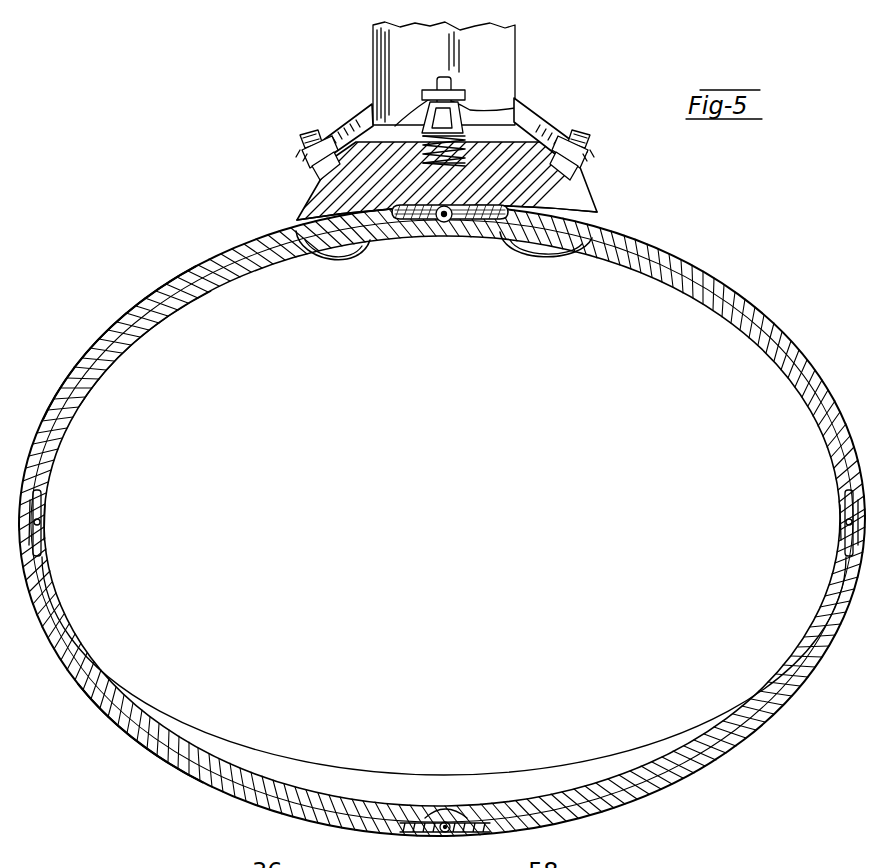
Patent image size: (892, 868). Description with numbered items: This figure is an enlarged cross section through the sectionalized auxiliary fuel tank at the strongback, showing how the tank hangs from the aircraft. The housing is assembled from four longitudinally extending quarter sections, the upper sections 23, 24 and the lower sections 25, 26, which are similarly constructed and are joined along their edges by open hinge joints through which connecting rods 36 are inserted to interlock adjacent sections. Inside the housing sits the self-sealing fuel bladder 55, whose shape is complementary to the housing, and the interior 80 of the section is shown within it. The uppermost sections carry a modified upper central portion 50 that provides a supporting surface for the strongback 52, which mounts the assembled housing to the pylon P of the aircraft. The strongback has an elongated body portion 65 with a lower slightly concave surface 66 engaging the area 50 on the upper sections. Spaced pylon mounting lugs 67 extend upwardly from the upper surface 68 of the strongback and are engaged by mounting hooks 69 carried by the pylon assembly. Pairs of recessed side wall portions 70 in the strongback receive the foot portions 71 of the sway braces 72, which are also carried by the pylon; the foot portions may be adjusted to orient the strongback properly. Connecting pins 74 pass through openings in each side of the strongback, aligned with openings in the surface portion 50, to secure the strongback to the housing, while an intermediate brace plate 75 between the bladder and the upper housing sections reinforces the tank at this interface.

The pylon P is at (372, 47).
The upper left hand quarter section 23 is at (775, 330).
The upper right hand quarter section 24 is at (158, 290).
The lower quarter section 25 is at (697, 768).
The lower quarter section 26 is at (90, 697).
The connecting rod 36 is at (43, 520).
The upper central portion 50 is at (478, 222).
The strongback 52 is at (585, 190).
The fuel bladder 55 is at (210, 280).
The elongated body portion 65 is at (553, 202).
The lower slightly concave surface 66 is at (372, 250).
The pylon mounting lug 67 is at (437, 130).
The upper surface 68 is at (545, 135).
The mounting hook 69 is at (450, 87).
The recessed side wall portion 70 is at (302, 190).
The foot portion 71 is at (305, 170).
The sway brace 72 is at (340, 130).
The connecting pin 74 is at (560, 248).
The intermediate brace plate 75 is at (448, 225).
The opening 80 is at (445, 527).